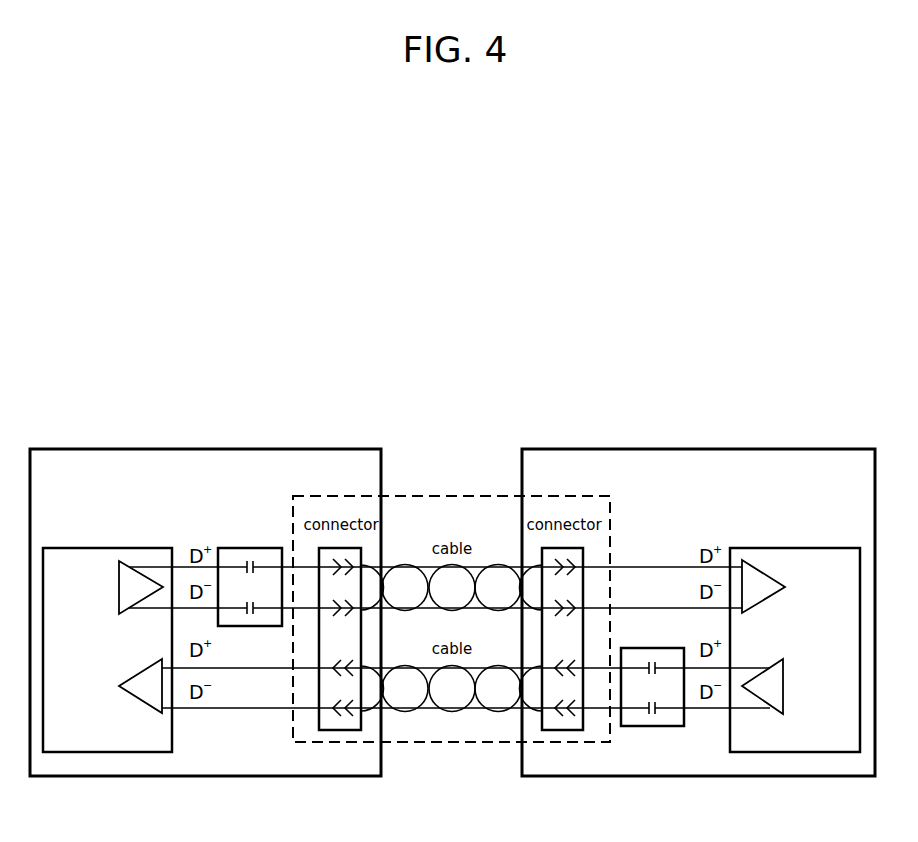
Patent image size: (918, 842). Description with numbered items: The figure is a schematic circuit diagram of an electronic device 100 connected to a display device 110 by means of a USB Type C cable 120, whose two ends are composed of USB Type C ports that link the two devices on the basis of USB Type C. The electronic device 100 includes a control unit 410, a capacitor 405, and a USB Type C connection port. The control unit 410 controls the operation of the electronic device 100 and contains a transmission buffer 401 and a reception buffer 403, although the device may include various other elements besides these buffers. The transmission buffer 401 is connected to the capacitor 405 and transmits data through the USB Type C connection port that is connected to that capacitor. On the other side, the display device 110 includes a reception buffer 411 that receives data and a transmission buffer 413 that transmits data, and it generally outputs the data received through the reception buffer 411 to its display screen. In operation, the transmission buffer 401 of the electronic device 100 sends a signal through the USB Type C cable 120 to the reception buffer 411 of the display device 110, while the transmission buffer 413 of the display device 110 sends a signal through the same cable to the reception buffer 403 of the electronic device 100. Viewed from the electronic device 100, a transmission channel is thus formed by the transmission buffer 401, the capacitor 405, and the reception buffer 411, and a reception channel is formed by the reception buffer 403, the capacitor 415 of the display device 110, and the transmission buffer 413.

The electronic device 100 is at (207, 449).
The display device 110 is at (700, 449).
The USB Type C cable 120 is at (430, 496).
The transmission buffer 401 is at (119, 587).
The reception buffer 403 is at (119, 686).
The capacitor 405 is at (250, 548).
The control unit 410 is at (107, 548).
The reception buffer 411 is at (785, 587).
The transmission buffer 413 is at (783, 686).
The capacitor 415 is at (652, 726).